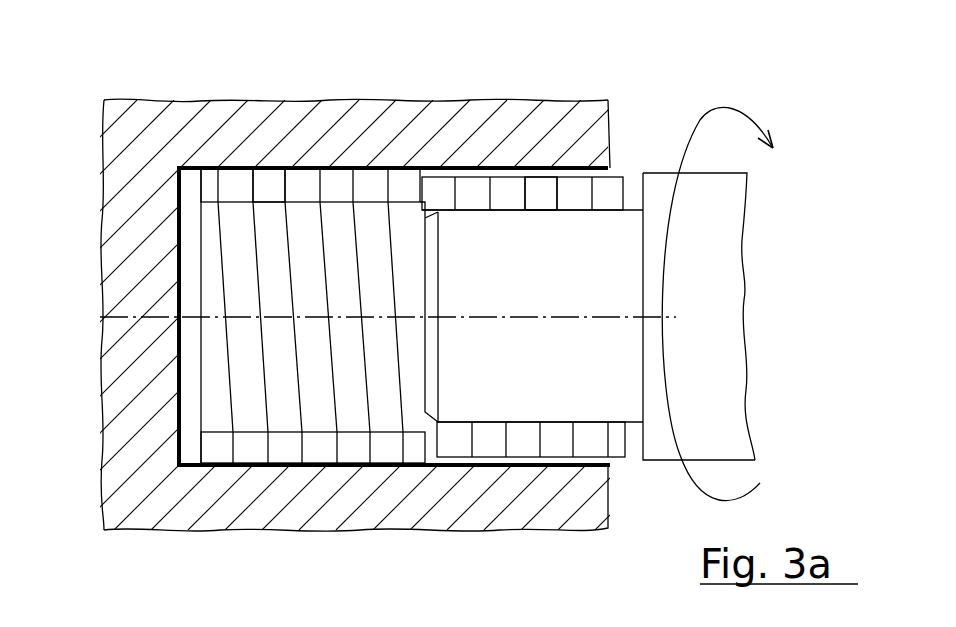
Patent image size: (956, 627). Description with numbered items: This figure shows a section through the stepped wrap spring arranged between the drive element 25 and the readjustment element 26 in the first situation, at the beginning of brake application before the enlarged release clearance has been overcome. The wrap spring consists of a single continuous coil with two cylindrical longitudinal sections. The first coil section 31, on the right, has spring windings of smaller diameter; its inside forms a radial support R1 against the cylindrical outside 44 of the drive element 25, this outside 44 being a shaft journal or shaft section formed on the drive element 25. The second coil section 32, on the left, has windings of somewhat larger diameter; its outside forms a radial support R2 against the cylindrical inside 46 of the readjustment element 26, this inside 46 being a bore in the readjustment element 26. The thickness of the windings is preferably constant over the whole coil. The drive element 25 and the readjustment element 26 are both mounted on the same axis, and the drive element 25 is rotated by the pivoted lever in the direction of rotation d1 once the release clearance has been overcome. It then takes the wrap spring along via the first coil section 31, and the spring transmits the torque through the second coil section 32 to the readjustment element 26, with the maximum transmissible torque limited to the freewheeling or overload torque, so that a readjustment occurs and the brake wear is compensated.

The second coil section 32 is at (420, 168).
The first coil section 31 is at (623, 177).
The radial support R2 is at (306, 167).
The radial support R1 is at (508, 212).
The cylindrical outside 44 is at (537, 208).
The cylindrical inside 46 is at (272, 172).
The readjustment element 26 is at (257, 488).
The drive element 25 is at (710, 267).
The direction of rotation d1 is at (733, 298).